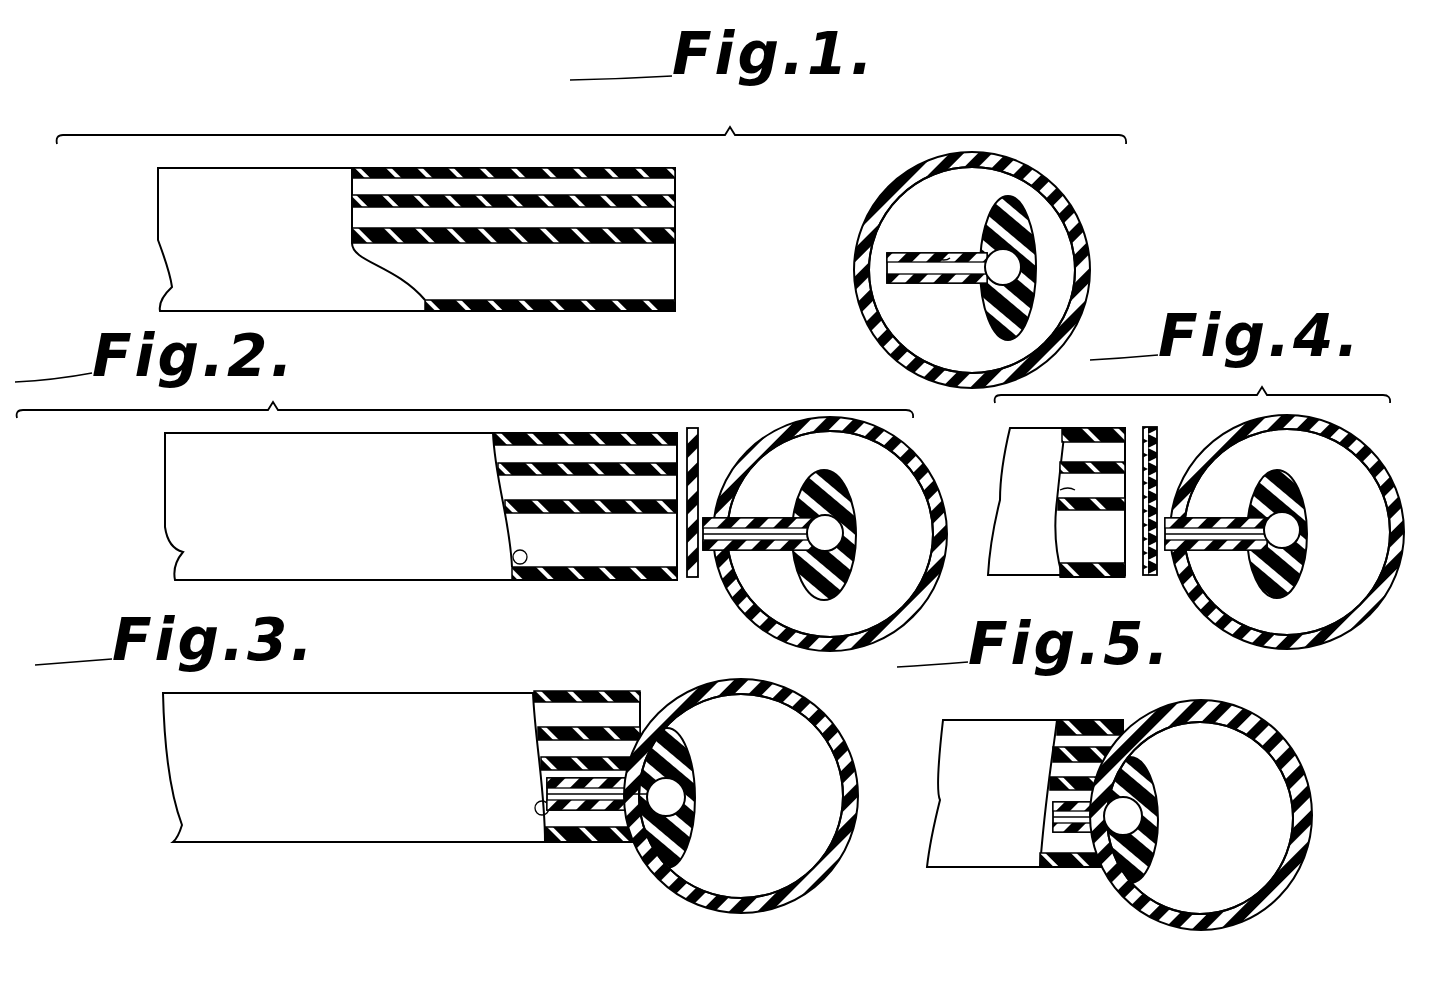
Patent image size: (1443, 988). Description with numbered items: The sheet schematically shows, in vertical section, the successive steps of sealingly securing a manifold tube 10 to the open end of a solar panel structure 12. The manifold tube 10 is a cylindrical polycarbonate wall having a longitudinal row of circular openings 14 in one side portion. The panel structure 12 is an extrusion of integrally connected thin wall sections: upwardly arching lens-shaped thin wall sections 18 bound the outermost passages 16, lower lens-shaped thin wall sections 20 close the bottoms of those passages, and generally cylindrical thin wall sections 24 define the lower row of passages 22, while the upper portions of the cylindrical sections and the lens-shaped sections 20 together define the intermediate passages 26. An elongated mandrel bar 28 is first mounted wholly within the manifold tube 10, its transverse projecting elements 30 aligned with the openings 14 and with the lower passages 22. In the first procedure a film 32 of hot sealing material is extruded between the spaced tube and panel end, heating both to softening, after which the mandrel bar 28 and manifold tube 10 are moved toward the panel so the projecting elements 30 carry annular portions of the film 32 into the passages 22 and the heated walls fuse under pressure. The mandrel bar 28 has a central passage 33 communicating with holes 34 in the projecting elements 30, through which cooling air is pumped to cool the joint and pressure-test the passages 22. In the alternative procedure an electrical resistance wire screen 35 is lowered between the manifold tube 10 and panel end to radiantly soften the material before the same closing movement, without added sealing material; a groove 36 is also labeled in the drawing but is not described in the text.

In FIG. 1, the manifold tube 10 is at (1040, 186).
In FIG. 2, the manifold tube 10 is at (898, 458).
In FIG. 4, the manifold tube 10 is at (1315, 432).
In FIG. 3, the manifold tube 10 is at (818, 710).
In FIG. 5, the manifold tube 10 is at (1245, 720).
In FIG. 1, the solar panel structure 12 is at (388, 318).
In FIG. 2, the solar panel structure 12 is at (480, 425).
In FIG. 4, the solar panel structure 12 is at (1012, 580).
In FIG. 3, the solar panel structure 12 is at (443, 688).
In FIG. 5, the solar panel structure 12 is at (966, 875).
In FIG. 1, the openings 14 is at (870, 252).
In FIG. 2, the openings 14 is at (748, 505).
In FIG. 4, the openings 14 is at (1192, 505).
In FIG. 3, the openings 14 is at (682, 765).
In FIG. 5, the openings 14 is at (1136, 782).
In FIG. 1, the outermost passages 16 is at (658, 172).
In FIG. 2, the outermost passages 16 is at (500, 440).
In FIG. 4, the outermost passages 16 is at (1070, 440).
In FIG. 3, the outermost passages 16 is at (532, 712).
In FIG. 5, the outermost passages 16 is at (1057, 730).
In FIG. 1, the upwardly arching thin wall sections 18 is at (608, 168).
In FIG. 2, the upwardly arching thin wall sections 18 is at (640, 433).
In FIG. 4, the upwardly arching thin wall sections 18 is at (1086, 436).
In FIG. 3, the upwardly arching thin wall sections 18 is at (582, 693).
In FIG. 5, the upwardly arching thin wall sections 18 is at (1105, 722).
In FIG. 1, the lens-shaped thin wall sections 20 is at (490, 195).
In FIG. 2, the lens-shaped thin wall sections 20 is at (510, 490).
In FIG. 4, the lens-shaped thin wall sections 20 is at (1070, 468).
In FIG. 3, the lens-shaped thin wall sections 20 is at (540, 748).
In FIG. 5, the lens-shaped thin wall sections 20 is at (1062, 752).
In FIG. 1, the lower row of passages 22 is at (655, 303).
In FIG. 2, the lower row of passages 22 is at (514, 557).
In FIG. 4, the lower row of passages 22 is at (1092, 570).
In FIG. 3, the lower row of passages 22 is at (520, 843).
In FIG. 5, the lower row of passages 22 is at (1045, 846).
In FIG. 1, the elongated thin wall sections 24 is at (543, 312).
In FIG. 2, the elongated thin wall sections 24 is at (580, 582).
In FIG. 4, the elongated thin wall sections 24 is at (1100, 578).
In FIG. 3, the elongated thin wall sections 24 is at (566, 843).
In FIG. 5, the elongated thin wall sections 24 is at (1085, 870).
In FIG. 1, the intermediate passages 26 is at (655, 232).
In FIG. 2, the intermediate passages 26 is at (540, 500).
In FIG. 4, the intermediate passages 26 is at (1075, 505).
In FIG. 3, the intermediate passages 26 is at (545, 770).
In FIG. 5, the intermediate passages 26 is at (1062, 780).
In FIG. 1, the mandrel bar 28 is at (1033, 238).
In FIG. 2, the mandrel bar 28 is at (852, 492).
In FIG. 4, the mandrel bar 28 is at (1295, 500).
In FIG. 3, the mandrel bar 28 is at (700, 770).
In FIG. 5, the mandrel bar 28 is at (1146, 792).
In FIG. 1, the projecting elements 30 is at (932, 290).
In FIG. 2, the projecting elements 30 is at (768, 520).
In FIG. 4, the projecting elements 30 is at (1220, 520).
In FIG. 3, the projecting elements 30 is at (548, 800).
In FIG. 5, the projecting elements 30 is at (1053, 802).
In FIG. 2, the film of hot sealing material 32 is at (700, 440).
In FIG. 1, the central passage 33 is at (1015, 270).
In FIG. 2, the central passage 33 is at (842, 548).
In FIG. 4, the central passage 33 is at (1296, 548).
In FIG. 3, the central passage 33 is at (690, 812).
In FIG. 5, the central passage 33 is at (1140, 836).
In FIG. 2, the holes 34 is at (748, 552).
In FIG. 4, the holes 34 is at (1205, 555).
In FIG. 3, the holes 34 is at (688, 845).
In FIG. 5, the holes 34 is at (1053, 824).
In FIG. 4, the electrical resistance wire screen 35 is at (1152, 432).
In FIG. 1, the groove 36 is at (950, 257).